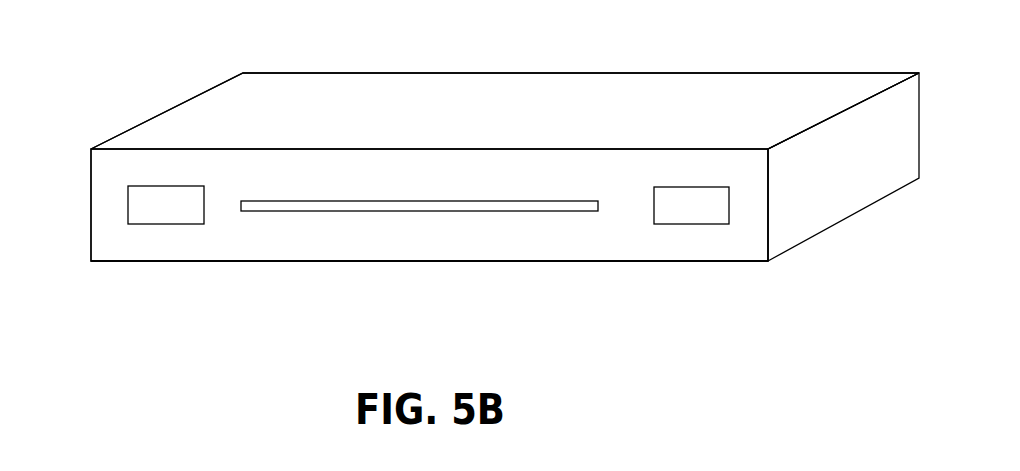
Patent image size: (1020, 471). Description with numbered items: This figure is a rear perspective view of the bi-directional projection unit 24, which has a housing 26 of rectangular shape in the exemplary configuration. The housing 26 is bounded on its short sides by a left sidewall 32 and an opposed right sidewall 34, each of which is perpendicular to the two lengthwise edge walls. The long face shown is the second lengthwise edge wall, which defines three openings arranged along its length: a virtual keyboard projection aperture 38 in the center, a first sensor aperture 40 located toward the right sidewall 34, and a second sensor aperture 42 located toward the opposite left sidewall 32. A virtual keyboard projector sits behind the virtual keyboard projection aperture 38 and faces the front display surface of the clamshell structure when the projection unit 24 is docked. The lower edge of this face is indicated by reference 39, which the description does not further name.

The bi-directional projection unit 24 is at (215, 49).
The housing 26 is at (632, 94).
The left sidewall 32 is at (847, 196).
The right sidewall 34 is at (78, 210).
The virtual keyboard projection aperture 38 is at (411, 205).
The bottom edge 39 is at (598, 251).
The first sensor aperture 40 is at (166, 205).
The second sensor aperture 42 is at (698, 204).